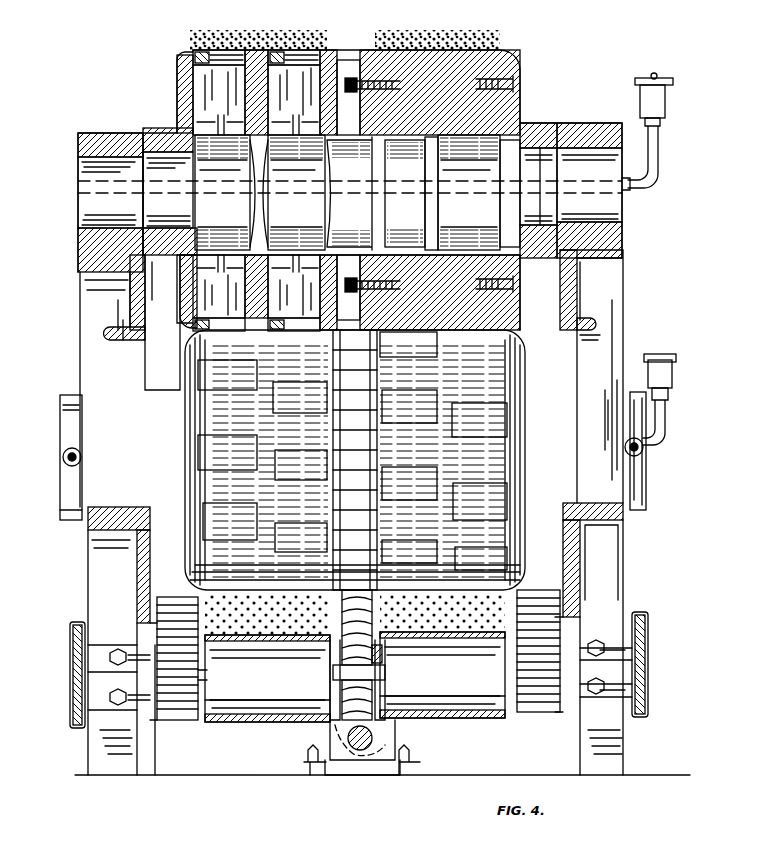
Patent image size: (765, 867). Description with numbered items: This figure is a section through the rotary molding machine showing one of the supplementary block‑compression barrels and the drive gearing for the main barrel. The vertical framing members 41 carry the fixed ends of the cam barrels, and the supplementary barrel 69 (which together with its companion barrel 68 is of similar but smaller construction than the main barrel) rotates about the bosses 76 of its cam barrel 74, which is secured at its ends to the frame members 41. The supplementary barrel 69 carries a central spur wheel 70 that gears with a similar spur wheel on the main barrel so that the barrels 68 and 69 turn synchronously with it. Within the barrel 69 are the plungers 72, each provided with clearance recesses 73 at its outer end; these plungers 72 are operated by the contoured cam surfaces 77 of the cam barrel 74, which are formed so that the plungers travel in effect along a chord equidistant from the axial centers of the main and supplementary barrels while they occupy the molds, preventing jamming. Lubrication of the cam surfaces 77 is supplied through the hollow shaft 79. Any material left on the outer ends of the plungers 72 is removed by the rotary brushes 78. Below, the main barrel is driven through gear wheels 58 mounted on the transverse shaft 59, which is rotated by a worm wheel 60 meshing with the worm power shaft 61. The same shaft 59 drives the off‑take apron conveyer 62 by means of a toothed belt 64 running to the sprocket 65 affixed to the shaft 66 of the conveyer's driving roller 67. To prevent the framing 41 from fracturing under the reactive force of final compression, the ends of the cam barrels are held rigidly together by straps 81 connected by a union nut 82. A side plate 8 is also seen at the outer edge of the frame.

The side plate 8 is at (66, 403).
The vertical framing members 41 is at (351, 512).
The gear wheels 58 is at (178, 600).
The transverse shaft 59 is at (328, 660).
The worm wheel 60 is at (383, 656).
The worm power shaft 61 is at (347, 738).
The off-take apron conveyer 62 is at (244, 708).
The toothed belt 64 is at (85, 636).
The sprocket 65 is at (70, 657).
The shaft 66 is at (207, 675).
The driving roller 67 is at (355, 677).
The supplementary barrel 68 is at (368, 113).
The supplementary barrel 69 is at (355, 460).
The central spur wheel 70 is at (355, 370).
The plungers 72 is at (285, 468).
The clearance recesses 73 is at (506, 34).
The cam barrel 74 is at (349, 193).
The bosses 76 is at (350, 188).
The cam surfaces 77 is at (402, 225).
The rotary brushes 78 is at (275, 45).
The hollow shaft 79 is at (516, 186).
The straps 81 is at (641, 475).
The union nut 82 is at (82, 460).